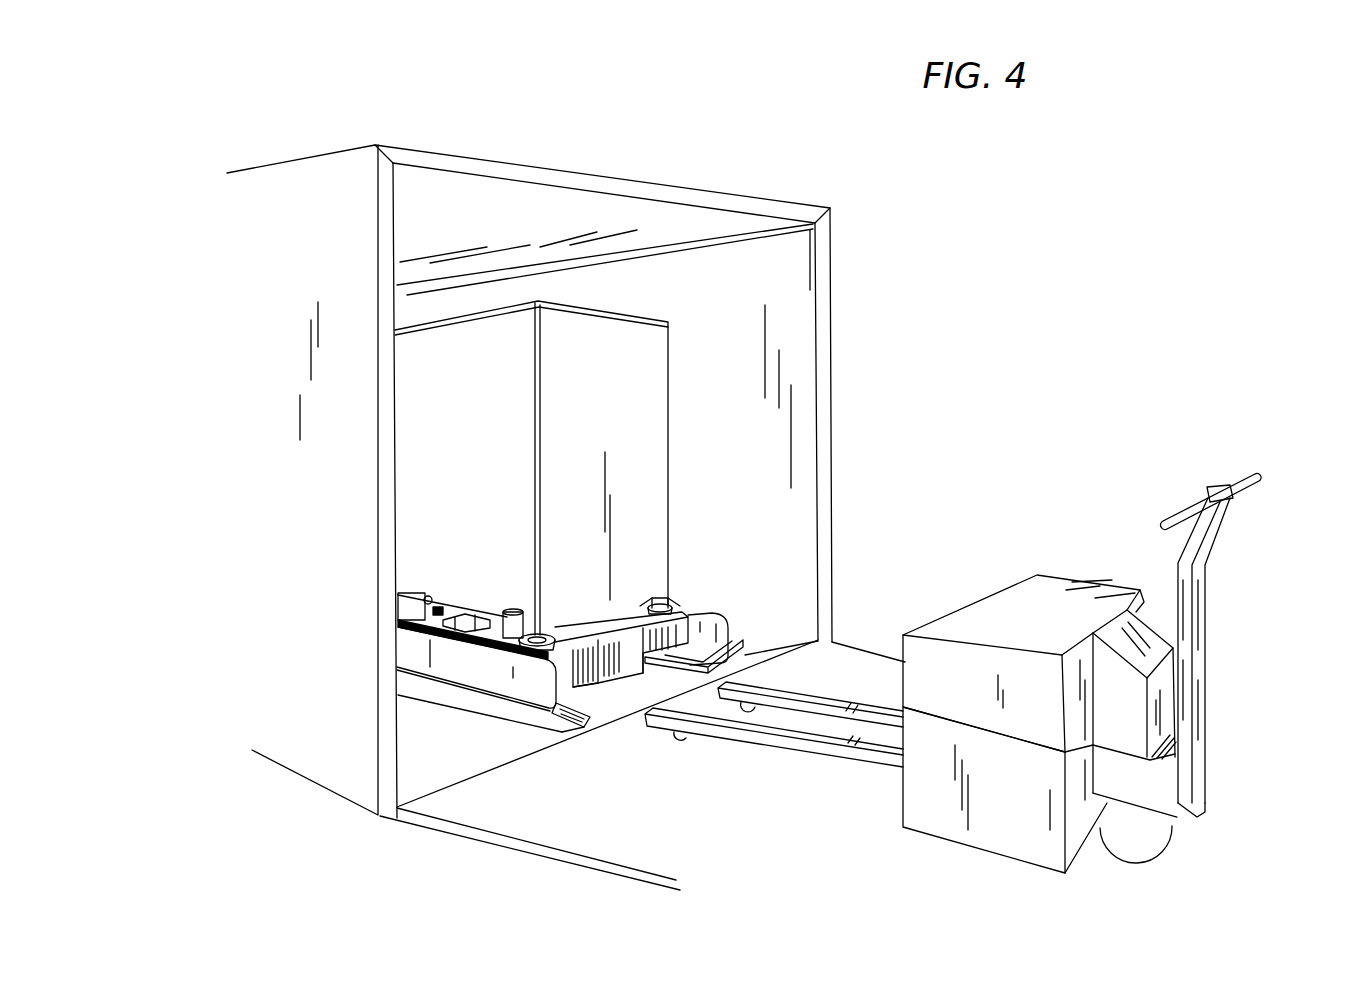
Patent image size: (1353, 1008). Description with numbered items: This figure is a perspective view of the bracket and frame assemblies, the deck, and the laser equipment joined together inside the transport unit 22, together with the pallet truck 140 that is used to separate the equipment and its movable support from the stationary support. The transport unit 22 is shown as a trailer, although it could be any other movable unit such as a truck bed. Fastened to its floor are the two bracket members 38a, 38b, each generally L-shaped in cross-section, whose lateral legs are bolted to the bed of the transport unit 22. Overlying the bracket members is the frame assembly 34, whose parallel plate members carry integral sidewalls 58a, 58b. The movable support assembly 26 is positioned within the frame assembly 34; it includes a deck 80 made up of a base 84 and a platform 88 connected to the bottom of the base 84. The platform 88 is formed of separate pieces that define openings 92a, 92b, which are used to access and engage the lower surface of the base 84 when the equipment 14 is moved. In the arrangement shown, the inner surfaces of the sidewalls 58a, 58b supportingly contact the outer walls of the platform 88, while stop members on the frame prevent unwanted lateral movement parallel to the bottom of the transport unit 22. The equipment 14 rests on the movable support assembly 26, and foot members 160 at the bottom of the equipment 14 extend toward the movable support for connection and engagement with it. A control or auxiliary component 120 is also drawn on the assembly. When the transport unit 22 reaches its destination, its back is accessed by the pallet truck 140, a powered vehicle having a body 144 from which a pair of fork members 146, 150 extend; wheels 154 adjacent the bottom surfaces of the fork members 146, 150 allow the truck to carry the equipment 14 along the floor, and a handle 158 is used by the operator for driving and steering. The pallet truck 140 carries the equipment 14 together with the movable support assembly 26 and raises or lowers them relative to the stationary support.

The equipment 14 is at (669, 347).
The transport unit 22 is at (836, 345).
The movable support assembly 26 is at (490, 633).
The frame assembly 34 is at (480, 668).
The bracket member 38a is at (548, 735).
The bracket member 38b is at (745, 650).
The sidewall 58a is at (505, 677).
The sidewall 58b is at (710, 617).
The deck 80 is at (625, 645).
The base 84 is at (683, 605).
The platform 88 is at (603, 690).
The opening 92a is at (578, 640).
The opening 92b is at (646, 606).
The control unit 120 is at (400, 617).
The pallet truck 140 is at (971, 642).
The body 144 is at (1045, 600).
The fork member 146 is at (812, 775).
The fork member 150 is at (813, 703).
The wheels 154 is at (742, 707).
The handle 158 is at (1198, 665).
The foot members 160 is at (533, 634).